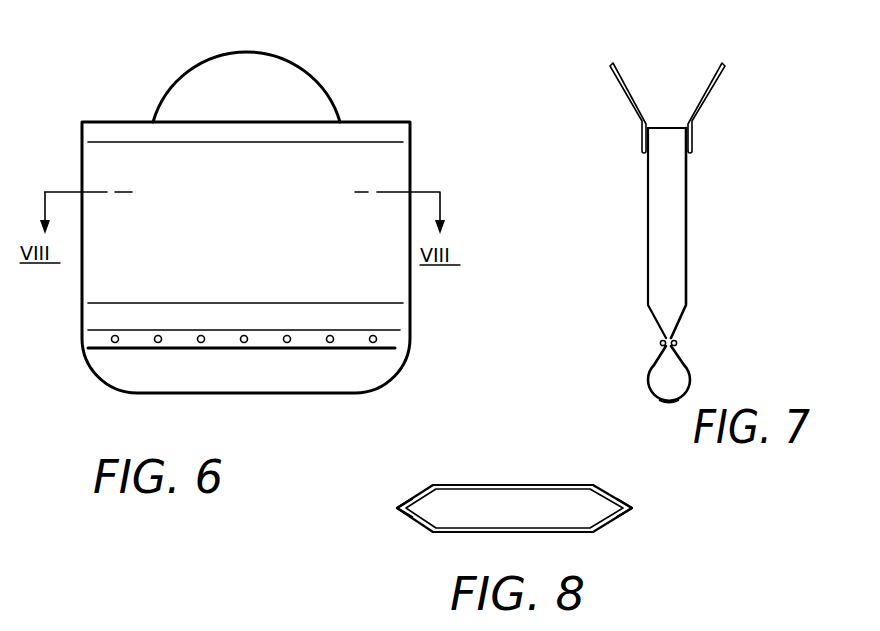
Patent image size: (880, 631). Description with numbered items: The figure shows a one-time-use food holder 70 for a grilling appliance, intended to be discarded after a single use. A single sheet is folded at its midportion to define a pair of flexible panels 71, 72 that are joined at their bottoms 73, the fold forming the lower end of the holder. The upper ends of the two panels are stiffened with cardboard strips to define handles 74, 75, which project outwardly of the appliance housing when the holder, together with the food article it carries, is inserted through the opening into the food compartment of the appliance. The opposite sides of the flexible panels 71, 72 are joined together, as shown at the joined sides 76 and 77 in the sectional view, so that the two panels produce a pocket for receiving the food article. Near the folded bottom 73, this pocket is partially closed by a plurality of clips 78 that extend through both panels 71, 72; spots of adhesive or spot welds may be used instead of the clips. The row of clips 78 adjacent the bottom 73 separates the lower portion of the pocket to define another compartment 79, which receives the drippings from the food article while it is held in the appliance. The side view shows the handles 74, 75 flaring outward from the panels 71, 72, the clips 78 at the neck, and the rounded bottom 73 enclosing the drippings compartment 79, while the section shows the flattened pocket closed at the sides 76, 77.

In FIG. 6, the container body 70 is at (154, 91).
In FIG. 6, the flexible panel 71 is at (390, 280).
In FIG. 7, the flexible panel 71 is at (649, 217).
In FIG. 7, the flexible panel 72 is at (687, 217).
In FIG. 8, the flexible panel 72 is at (495, 485).
In FIG. 7, the bottom 73 is at (660, 403).
In FIG. 6, the handle 74 is at (318, 88).
In FIG. 7, the handle 74 is at (630, 105).
In FIG. 7, the handle 75 is at (718, 89).
In FIG. 8, the joined side 76 is at (397, 506).
In FIG. 8, the joined side 77 is at (632, 506).
In FIG. 6, the clip 78 is at (376, 341).
In FIG. 7, the clip 78 is at (677, 345).
In FIG. 7, the compartment 79 is at (656, 373).